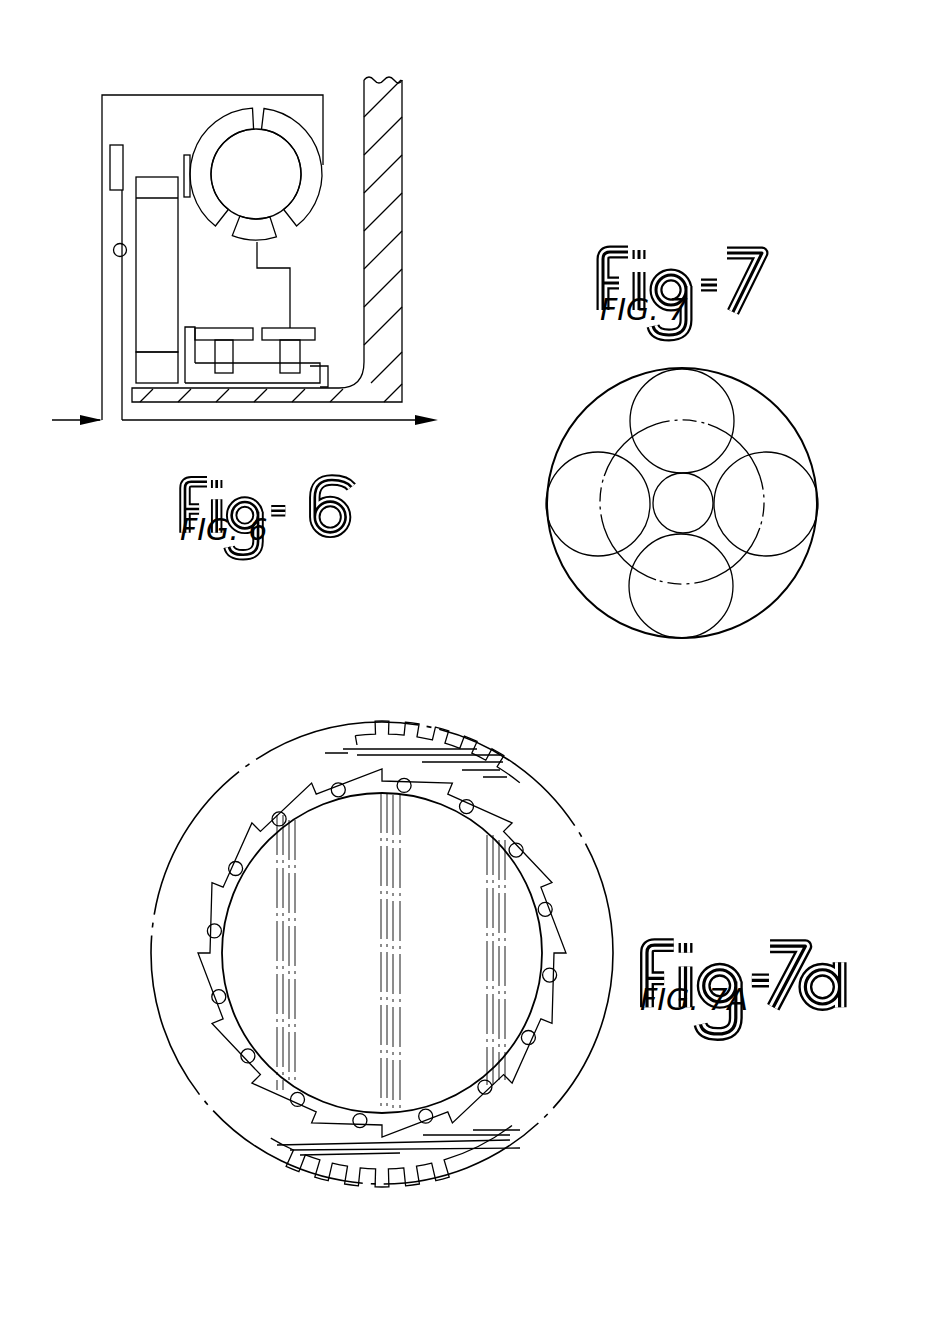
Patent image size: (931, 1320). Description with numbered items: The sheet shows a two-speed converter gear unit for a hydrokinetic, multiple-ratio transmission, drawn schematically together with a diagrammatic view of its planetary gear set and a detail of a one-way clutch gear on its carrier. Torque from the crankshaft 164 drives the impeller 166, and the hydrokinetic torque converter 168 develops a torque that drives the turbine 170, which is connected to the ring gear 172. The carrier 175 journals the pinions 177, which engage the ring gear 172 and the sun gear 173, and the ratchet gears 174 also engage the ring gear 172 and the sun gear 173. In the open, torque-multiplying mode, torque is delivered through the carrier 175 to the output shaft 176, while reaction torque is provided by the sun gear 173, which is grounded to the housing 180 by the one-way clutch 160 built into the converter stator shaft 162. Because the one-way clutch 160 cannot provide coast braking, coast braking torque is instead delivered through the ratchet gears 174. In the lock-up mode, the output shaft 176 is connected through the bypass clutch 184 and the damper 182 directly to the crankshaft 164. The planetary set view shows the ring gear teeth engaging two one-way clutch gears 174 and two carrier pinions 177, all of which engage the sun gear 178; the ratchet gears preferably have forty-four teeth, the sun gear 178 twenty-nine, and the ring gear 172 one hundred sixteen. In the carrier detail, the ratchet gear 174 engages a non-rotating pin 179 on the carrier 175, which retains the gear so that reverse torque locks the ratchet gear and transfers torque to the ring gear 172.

In FIG. 6, the one-way clutch 160 is at (218, 327).
In FIG. 6, the converter stator shaft 162 is at (308, 377).
In FIG. 6, the crankshaft 164 is at (63, 422).
In FIG. 6, the impeller 166 is at (302, 193).
In FIG. 6, the hydrokinetic torque converter 168 is at (272, 182).
In FIG. 6, the turbine 170 is at (222, 133).
In FIG. 6, the ring gear 172 is at (157, 188).
In FIG. 6, the sun gear 173 is at (157, 367).
In FIG. 7, the ratchet gears 174 is at (700, 398).
In FIG. 7A, the ratchet gears 174 is at (407, 743).
In FIG. 6, the carrier 175 is at (133, 272).
In FIG. 7, the carrier 175 is at (738, 560).
In FIG. 7A, the carrier 175 is at (558, 923).
In FIG. 6, the output shaft 176 is at (207, 422).
In FIG. 7, the pinions 177 is at (567, 505).
In FIG. 7, the sun gear 178 is at (690, 498).
In FIG. 7A, the non-rotating pin 179 is at (364, 1037).
In FIG. 6, the housing 180 is at (387, 155).
In FIG. 6, the damper 182 is at (114, 246).
In FIG. 6, the bypass clutch 184 is at (108, 167).